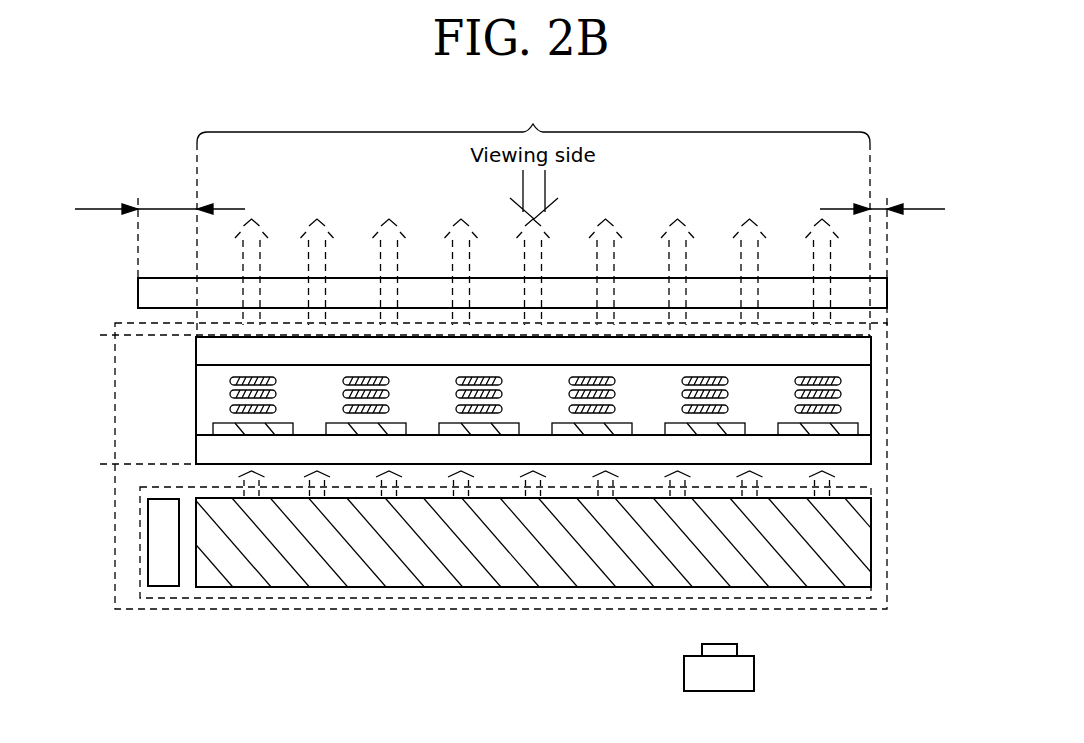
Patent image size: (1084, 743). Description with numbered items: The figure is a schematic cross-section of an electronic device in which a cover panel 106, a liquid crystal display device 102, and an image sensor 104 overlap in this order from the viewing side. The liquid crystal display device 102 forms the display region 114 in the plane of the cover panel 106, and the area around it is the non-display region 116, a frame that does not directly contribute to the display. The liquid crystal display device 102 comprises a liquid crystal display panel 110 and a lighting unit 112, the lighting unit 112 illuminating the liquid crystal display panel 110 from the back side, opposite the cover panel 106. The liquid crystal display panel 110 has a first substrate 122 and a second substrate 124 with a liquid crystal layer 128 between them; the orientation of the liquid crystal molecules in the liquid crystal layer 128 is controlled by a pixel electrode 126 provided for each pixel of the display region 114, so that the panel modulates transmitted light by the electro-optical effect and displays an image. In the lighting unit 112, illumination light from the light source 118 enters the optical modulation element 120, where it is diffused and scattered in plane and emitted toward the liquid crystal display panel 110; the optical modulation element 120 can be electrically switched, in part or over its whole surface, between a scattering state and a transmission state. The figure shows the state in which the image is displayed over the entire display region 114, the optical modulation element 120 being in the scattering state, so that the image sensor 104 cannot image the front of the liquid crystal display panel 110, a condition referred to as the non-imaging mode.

The liquid crystal display device 102 is at (485, 609).
The image sensor 104 is at (748, 672).
The cover panel 106 is at (155, 290).
The liquid crystal display panel 110 is at (502, 399).
The lighting unit 112 is at (538, 602).
The display region 114 is at (533, 121).
The non-display region 116 is at (513, 200).
The light source 118 is at (163, 586).
The optical modulation element 120 is at (253, 587).
The first substrate 122 is at (858, 452).
The second substrate 124 is at (853, 353).
The pixel electrode 126 is at (493, 428).
The liquid crystal layer 128 is at (853, 397).